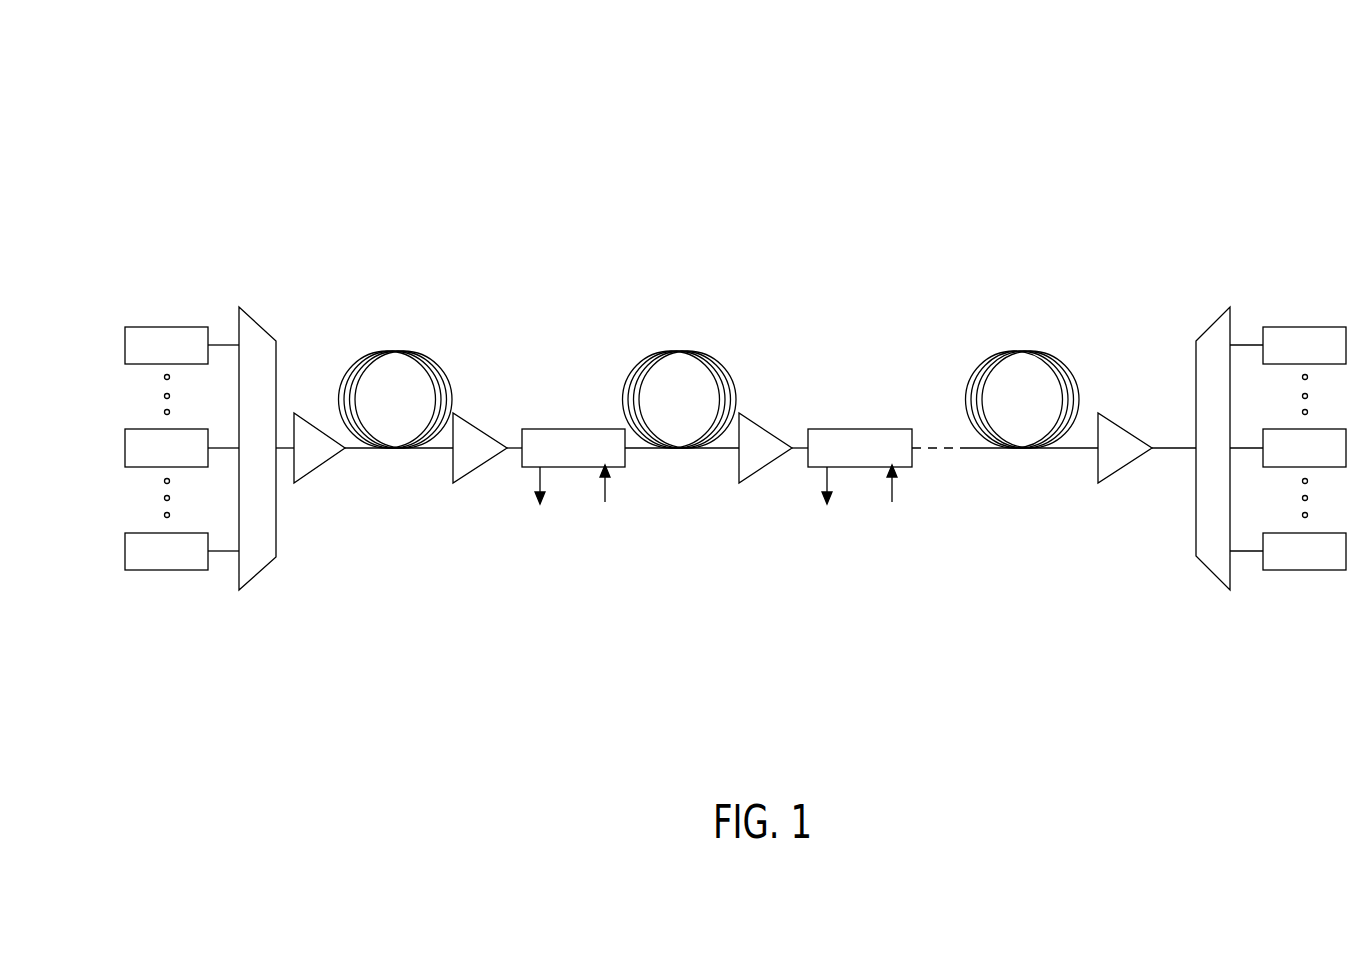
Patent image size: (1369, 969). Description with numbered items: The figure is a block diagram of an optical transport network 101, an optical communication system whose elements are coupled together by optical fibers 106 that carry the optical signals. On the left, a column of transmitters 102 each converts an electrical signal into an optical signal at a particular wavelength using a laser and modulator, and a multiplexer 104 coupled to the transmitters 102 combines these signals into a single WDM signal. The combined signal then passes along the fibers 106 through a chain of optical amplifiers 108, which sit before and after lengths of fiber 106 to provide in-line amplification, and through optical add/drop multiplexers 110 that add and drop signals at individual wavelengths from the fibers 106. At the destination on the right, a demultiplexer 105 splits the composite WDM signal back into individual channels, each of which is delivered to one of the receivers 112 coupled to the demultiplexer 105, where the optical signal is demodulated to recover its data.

The optical transport network 101 is at (209, 74).
The transmitter 102 is at (151, 327).
The multiplexer 104 is at (259, 320).
The demultiplexer 105 is at (1214, 322).
The optical fiber 106 is at (390, 351).
The optical amplifier 108 is at (313, 470).
The optical add/drop multiplexer 110 is at (560, 429).
The receiver 112 is at (1318, 327).